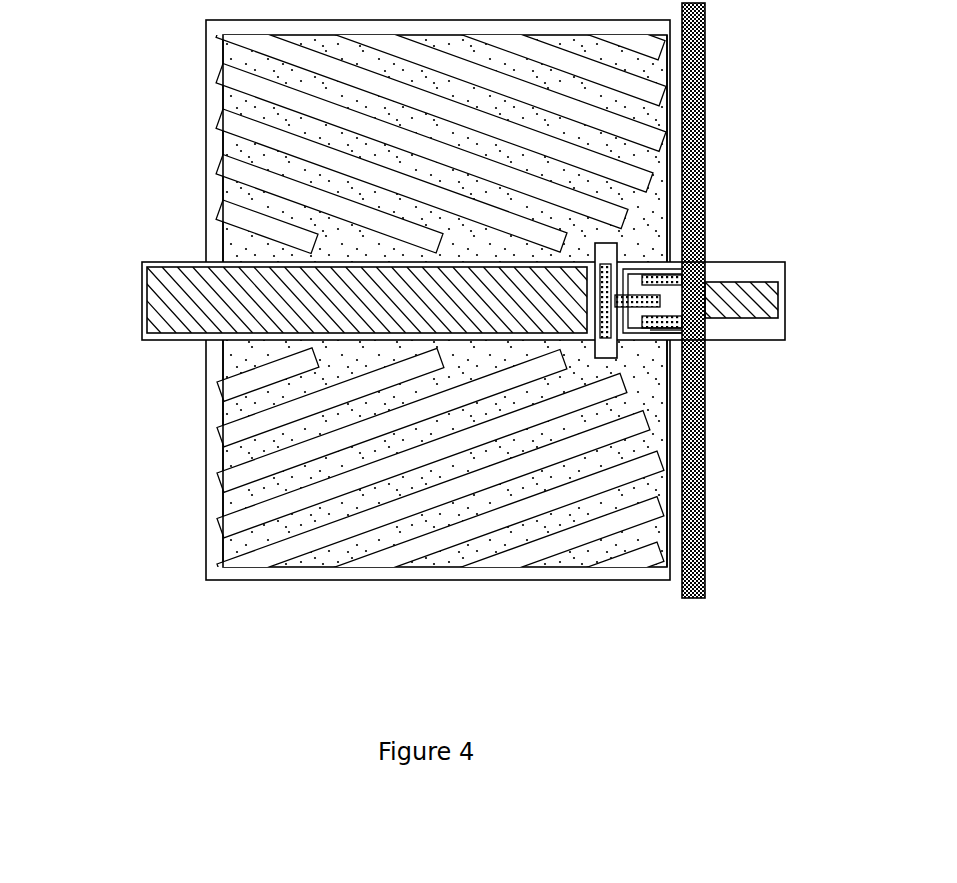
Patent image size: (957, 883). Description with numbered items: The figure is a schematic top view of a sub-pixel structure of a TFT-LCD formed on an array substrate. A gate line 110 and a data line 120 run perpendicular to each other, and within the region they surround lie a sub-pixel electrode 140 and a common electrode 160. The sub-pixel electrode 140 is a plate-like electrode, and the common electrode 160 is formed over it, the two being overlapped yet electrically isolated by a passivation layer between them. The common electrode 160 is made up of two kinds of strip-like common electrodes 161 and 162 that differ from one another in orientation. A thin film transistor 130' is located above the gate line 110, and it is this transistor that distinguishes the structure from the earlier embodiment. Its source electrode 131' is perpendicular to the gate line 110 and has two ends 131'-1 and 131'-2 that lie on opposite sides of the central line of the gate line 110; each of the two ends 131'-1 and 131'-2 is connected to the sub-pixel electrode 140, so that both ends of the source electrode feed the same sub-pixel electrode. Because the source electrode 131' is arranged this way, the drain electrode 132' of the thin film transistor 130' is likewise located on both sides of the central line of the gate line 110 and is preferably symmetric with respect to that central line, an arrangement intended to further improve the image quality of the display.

The gate line 110 is at (548, 282).
The data line 120 is at (690, 478).
The thin film transistor 130' is at (700, 380).
The source electrode 131' is at (704, 245).
The first end of source electrode 131'-1 is at (713, 242).
The second end of source electrode 131'-2 is at (729, 418).
The drain electrode 132' is at (733, 340).
The sub-pixel electrode 140 is at (250, 495).
The common electrode 160 is at (76, 236).
The strip-like common electrode 161 is at (245, 177).
The strip-like common electrode 162 is at (235, 472).